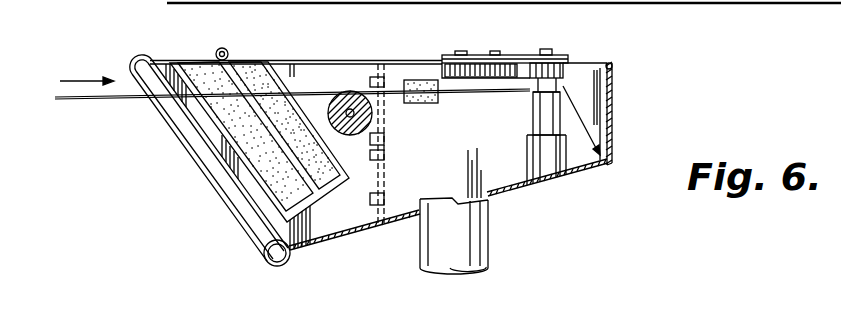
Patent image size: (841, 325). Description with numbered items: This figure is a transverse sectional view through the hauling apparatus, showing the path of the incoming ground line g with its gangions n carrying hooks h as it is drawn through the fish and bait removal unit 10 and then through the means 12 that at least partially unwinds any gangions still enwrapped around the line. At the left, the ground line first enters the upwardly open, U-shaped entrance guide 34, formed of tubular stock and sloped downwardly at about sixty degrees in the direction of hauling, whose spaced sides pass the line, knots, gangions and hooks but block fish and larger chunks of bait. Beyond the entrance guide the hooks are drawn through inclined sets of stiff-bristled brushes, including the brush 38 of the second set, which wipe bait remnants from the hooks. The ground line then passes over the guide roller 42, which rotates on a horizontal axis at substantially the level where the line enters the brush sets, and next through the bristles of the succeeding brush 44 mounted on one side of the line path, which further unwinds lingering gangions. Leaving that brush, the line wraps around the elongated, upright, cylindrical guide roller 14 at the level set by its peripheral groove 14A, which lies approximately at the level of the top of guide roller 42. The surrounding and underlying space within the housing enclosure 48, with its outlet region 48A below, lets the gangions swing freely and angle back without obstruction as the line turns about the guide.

The fish and bait removal unit 10 is at (241, 52).
The gangion unwinding means 12 is at (398, 48).
The direction-changing guide roller 14 is at (572, 78).
The peripheral groove 14A is at (543, 94).
The entrance guide 34 is at (203, 68).
The brush of second set 38 is at (270, 64).
The guide roller 42 is at (356, 133).
The brush 44 is at (423, 79).
The housing enclosure 48 is at (514, 188).
The outlet opening 48A is at (580, 156).
The ground line g is at (103, 98).
The hooks h is at (243, 160).
The gangions n is at (245, 158).